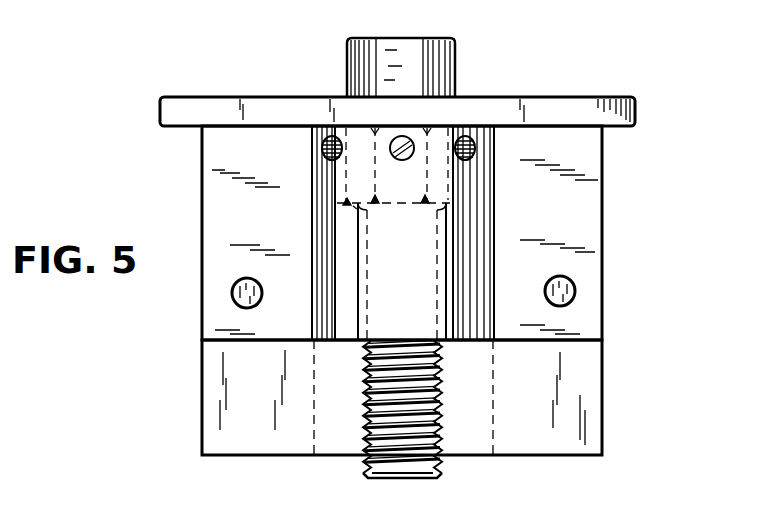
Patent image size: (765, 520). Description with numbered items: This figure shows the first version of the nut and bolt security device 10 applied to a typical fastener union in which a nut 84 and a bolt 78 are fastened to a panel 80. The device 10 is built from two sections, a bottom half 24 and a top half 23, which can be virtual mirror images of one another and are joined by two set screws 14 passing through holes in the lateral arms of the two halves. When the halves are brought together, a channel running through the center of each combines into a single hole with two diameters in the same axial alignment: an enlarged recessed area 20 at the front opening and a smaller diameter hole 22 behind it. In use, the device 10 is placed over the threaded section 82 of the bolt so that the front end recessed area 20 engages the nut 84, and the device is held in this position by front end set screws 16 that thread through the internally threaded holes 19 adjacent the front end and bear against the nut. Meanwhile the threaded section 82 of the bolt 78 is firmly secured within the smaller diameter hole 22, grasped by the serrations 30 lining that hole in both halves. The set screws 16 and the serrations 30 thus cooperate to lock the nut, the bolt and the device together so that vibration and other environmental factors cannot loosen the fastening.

The nut and bolt security device 10 is at (700, 216).
The set screws 14 is at (575, 290).
The front end set screws 16 is at (400, 134).
The internally threaded holes 19 is at (322, 152).
The recessed area 20 is at (340, 186).
The smaller diameter hole 22 is at (352, 244).
The top half 23 is at (600, 388).
The bottom half 24 is at (590, 212).
The serrations 30 is at (363, 418).
The bolt 78 is at (455, 53).
The panel 80 is at (547, 108).
The threaded section of the bolt 82 is at (372, 468).
The nut 84 is at (337, 207).